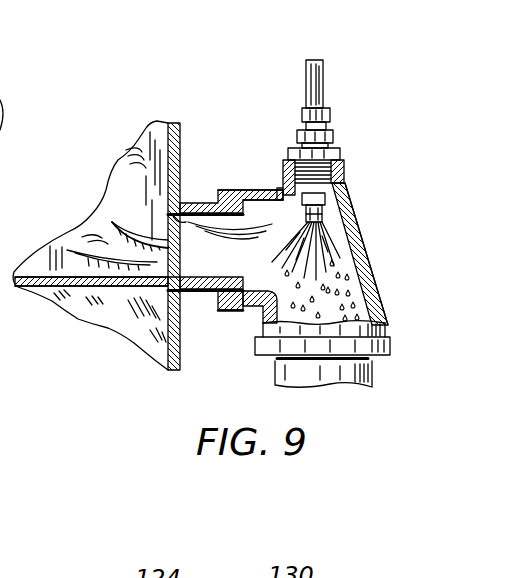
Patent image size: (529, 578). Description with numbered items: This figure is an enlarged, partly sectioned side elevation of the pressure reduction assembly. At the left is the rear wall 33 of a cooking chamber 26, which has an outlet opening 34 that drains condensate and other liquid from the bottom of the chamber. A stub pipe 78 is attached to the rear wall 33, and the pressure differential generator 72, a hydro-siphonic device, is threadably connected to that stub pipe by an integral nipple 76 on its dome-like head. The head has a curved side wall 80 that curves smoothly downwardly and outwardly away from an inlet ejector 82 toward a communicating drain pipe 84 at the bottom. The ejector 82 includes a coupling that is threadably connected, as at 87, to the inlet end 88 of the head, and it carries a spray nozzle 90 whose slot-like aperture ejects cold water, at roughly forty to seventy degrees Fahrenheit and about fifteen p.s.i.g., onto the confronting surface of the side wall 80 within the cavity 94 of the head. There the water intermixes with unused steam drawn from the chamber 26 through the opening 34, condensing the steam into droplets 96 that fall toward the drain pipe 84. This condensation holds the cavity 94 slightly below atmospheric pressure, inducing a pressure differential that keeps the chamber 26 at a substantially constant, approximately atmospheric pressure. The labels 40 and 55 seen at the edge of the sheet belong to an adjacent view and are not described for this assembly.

The chamber 26 is at (129, 214).
The rear wall 33 is at (182, 126).
The outlet opening 34 is at (194, 206).
The housing 40 is at (0, 3).
The conduit 55 is at (0, 88).
The pressure differential generator 72 is at (348, 210).
The nipple 76 is at (234, 190).
The stub pipe 78 is at (192, 292).
The curved side wall 80 is at (355, 260).
The inlet ejector 82 is at (323, 106).
The drain pipe 84 is at (373, 367).
The threaded connection 87 is at (342, 152).
The inlet end 88 is at (348, 165).
The spray nozzle 90 is at (348, 194).
The cavity 94 is at (303, 222).
The droplets 96 is at (350, 287).